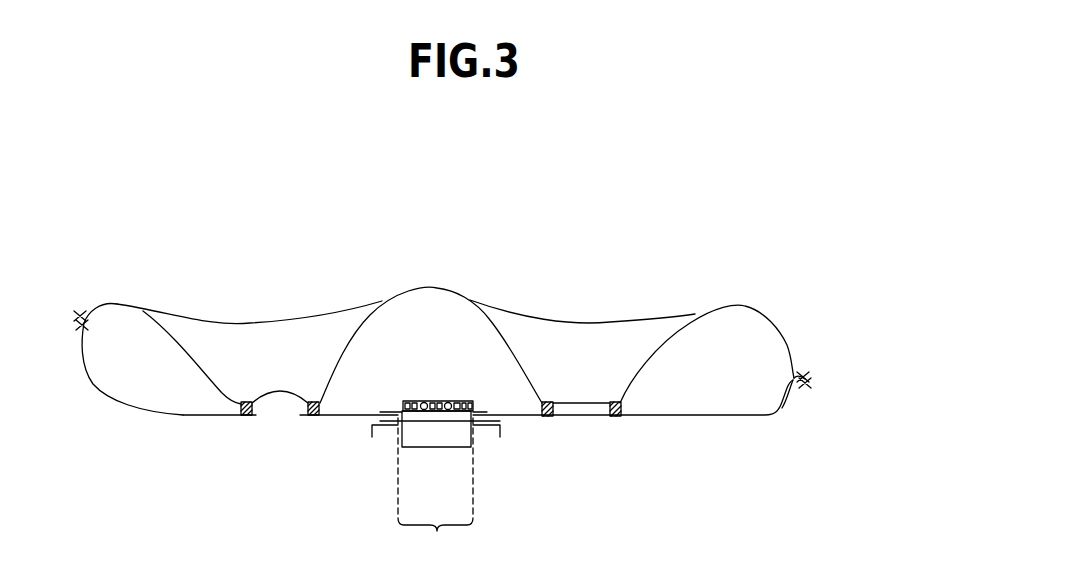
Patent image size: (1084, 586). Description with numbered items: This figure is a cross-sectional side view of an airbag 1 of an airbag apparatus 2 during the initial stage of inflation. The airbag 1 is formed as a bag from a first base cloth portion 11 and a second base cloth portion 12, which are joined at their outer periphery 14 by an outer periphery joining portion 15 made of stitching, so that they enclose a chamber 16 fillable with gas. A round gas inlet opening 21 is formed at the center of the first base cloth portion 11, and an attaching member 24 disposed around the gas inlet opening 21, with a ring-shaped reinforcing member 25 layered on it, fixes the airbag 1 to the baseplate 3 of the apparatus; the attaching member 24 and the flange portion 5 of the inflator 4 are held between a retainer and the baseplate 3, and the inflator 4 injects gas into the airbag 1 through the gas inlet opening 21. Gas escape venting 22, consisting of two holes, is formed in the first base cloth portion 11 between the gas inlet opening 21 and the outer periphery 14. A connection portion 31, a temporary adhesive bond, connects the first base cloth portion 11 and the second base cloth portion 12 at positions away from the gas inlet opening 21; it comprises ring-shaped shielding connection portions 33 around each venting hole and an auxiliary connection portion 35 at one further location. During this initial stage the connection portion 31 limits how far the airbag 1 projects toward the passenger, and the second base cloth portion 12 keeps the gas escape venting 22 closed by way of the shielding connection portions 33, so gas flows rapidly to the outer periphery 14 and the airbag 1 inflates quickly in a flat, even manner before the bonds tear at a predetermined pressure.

The airbag 1 is at (743, 261).
The airbag apparatus 2 is at (737, 183).
The baseplate 3 is at (372, 428).
The inflator 4 is at (420, 440).
The flange portion 5 is at (447, 423).
The first base cloth portion 11 is at (708, 420).
The second base cloth portion 12 is at (690, 320).
The outer periphery 14 is at (809, 375).
The outer periphery joining portion 15 is at (802, 373).
The chamber 16 is at (422, 307).
The gas inlet opening 21 is at (431, 462).
The gas escape venting 22 is at (283, 406).
The attaching member 24 is at (521, 418).
The reinforcing member 25 is at (480, 410).
The connection portion 31 is at (230, 414).
The shielding connection portion 33 is at (250, 416).
The auxiliary connection portion 35 is at (622, 420).